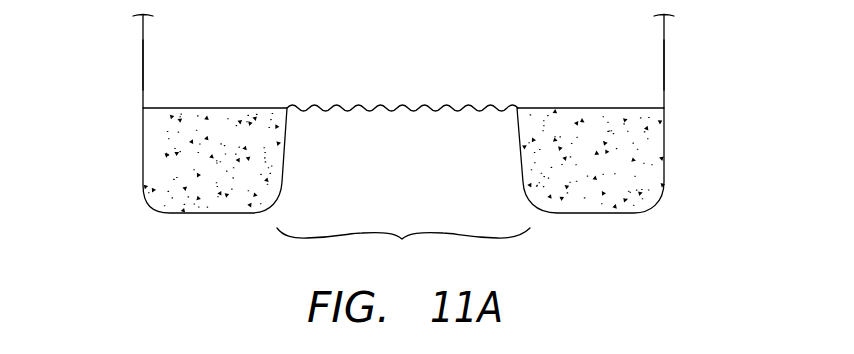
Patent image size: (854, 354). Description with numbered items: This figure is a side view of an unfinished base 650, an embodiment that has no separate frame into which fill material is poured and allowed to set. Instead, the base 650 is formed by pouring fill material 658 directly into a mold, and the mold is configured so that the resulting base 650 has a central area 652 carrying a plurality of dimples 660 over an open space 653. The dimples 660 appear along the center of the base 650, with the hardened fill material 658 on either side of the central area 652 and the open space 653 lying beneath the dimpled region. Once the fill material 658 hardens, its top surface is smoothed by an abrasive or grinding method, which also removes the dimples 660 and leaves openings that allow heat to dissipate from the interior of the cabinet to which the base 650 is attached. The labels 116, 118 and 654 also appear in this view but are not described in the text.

The first sidewall/gate edge 116 is at (142, 60).
The second sidewall/gate edge 118 is at (665, 60).
The base 650 is at (744, 147).
The central area 652 is at (403, 250).
The open space 653 is at (392, 157).
The source/drain recess filled region 654 is at (137, 208).
The fill material 658 is at (587, 119).
The dimples 660 is at (316, 105).